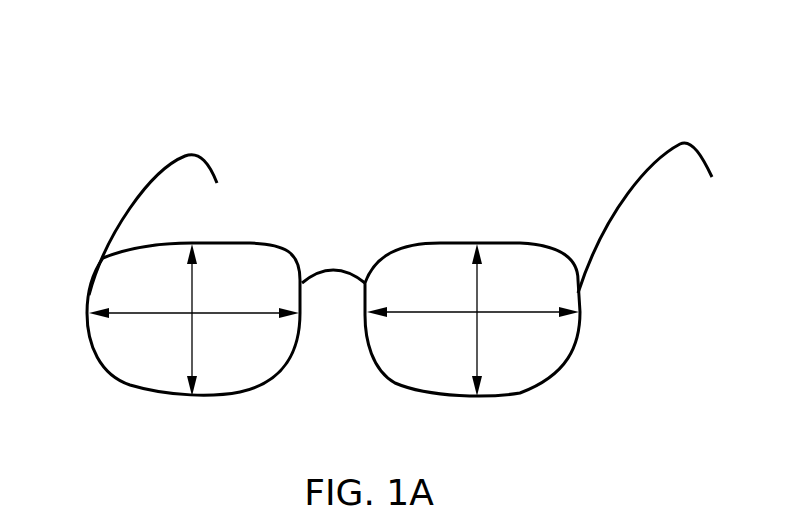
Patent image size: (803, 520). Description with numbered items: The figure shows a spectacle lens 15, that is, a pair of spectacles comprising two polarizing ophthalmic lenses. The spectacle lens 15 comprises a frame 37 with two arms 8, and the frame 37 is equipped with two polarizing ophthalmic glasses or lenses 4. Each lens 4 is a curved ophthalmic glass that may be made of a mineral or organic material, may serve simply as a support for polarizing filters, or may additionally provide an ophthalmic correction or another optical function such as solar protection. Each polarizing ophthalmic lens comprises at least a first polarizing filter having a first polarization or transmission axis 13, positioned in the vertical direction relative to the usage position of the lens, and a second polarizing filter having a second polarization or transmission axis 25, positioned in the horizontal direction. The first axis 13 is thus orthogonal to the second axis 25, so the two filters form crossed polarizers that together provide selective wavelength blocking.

The spectacle lens 15 is at (104, 98).
The arm 8 is at (138, 200).
The frame 37 is at (247, 243).
The polarizing ophthalmic lens 4 is at (240, 348).
The first polarization axis 13 is at (192, 295).
The second polarization axis 25 is at (152, 313).